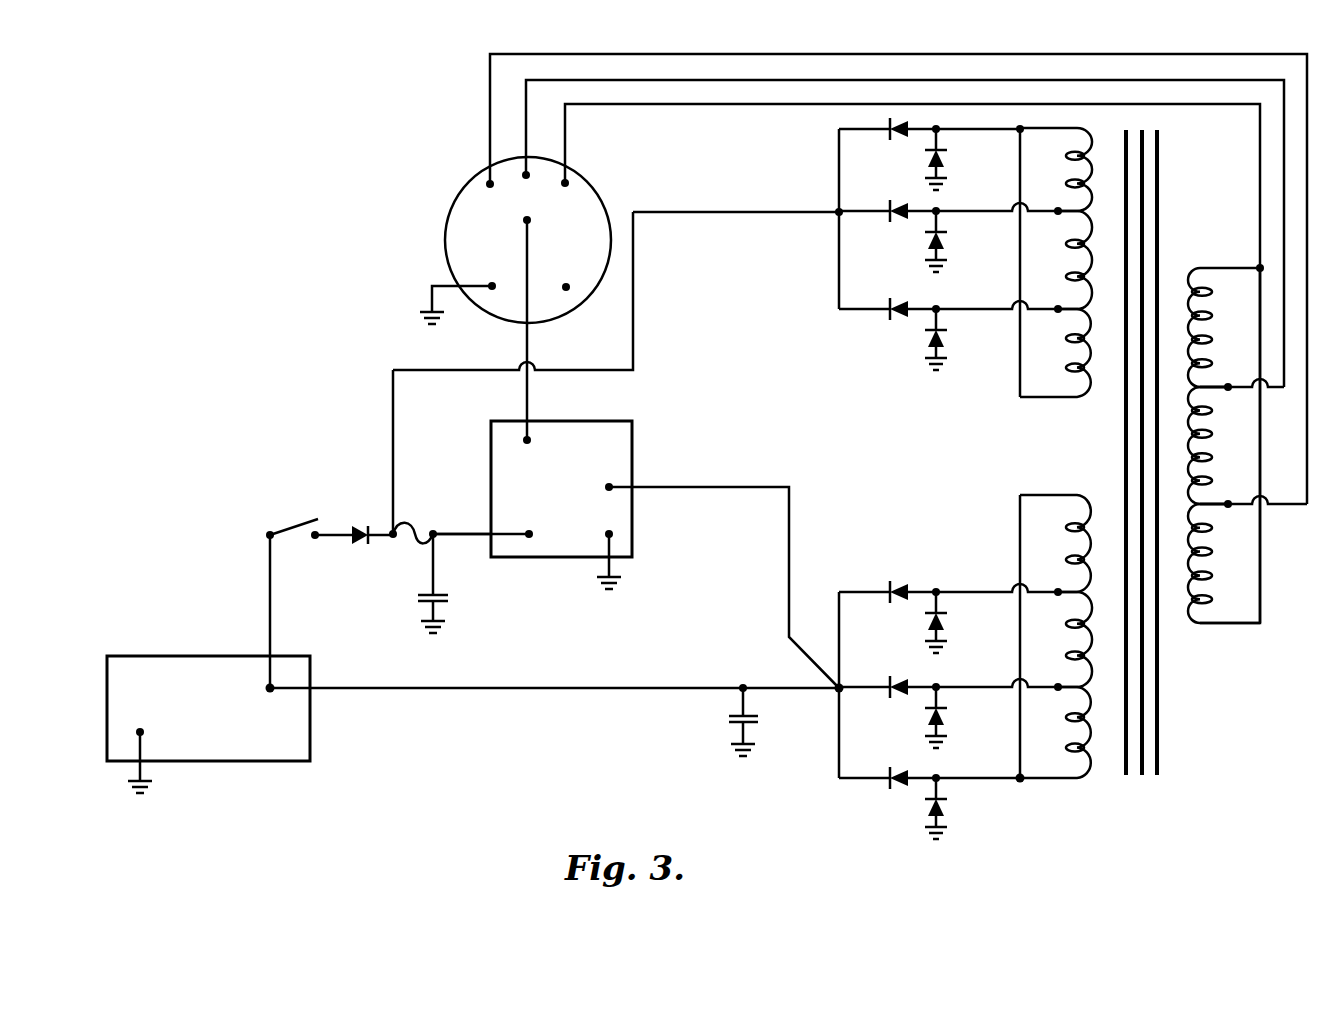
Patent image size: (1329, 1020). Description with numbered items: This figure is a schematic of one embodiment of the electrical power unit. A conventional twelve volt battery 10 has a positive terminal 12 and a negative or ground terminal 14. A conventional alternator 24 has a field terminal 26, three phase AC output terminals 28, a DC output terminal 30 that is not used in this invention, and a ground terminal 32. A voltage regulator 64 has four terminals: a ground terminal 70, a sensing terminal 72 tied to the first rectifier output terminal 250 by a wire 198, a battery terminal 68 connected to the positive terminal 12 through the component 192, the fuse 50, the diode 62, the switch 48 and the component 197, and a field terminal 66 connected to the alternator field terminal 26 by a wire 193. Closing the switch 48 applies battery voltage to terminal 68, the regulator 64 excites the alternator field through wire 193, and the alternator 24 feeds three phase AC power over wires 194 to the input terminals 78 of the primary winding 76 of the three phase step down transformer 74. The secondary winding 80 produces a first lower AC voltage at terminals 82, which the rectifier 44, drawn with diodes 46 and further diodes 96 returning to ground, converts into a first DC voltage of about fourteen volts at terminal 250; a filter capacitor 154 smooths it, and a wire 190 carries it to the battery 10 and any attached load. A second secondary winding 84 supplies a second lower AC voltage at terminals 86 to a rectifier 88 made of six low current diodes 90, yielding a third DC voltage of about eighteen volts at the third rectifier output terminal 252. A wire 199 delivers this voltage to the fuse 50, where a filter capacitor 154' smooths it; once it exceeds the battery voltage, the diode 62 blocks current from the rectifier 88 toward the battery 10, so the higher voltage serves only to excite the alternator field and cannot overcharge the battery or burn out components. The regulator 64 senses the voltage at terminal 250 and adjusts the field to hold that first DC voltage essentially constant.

The battery 10 is at (107, 700).
The positive terminal 12 is at (270, 694).
The negative or ground terminal 14 is at (145, 732).
The alternator 24 is at (446, 232).
The field terminal 26 is at (531, 221).
The three phase AC output terminals 28 is at (543, 193).
The DC output terminal 30 is at (566, 283).
The ground terminal 32 is at (492, 282).
The rectifier 44 is at (914, 536).
The diodes 46 is at (896, 606).
The switch 48 is at (292, 525).
The fuse 50 is at (421, 545).
The diode 62 is at (356, 545).
The voltage regulator 64 is at (491, 472).
The field terminal 66 is at (531, 441).
The battery terminal 68 is at (531, 530).
The ground terminal 70 is at (605, 534).
The sensing terminal 72 is at (605, 487).
The three phase AC step down transformer 74 is at (1200, 752).
The primary winding 76 is at (1224, 638).
The input terminals 78 is at (1258, 266).
The secondary winding 80 is at (1076, 797).
The secondary terminals 82 is at (1058, 590).
The second secondary winding 84 is at (1058, 410).
The secondary terminals 86 is at (1023, 133).
The rectifier 88 is at (850, 333).
The diodes 90 is at (896, 144).
The zener diodes 96 is at (948, 621).
The filter capacitor 154 is at (719, 725).
The filter capacitor 154' is at (413, 592).
The wire 190 is at (547, 690).
The circuit component 192 is at (466, 540).
The wire 193 is at (530, 398).
The wires 194 is at (1100, 53).
The circuit component 197 is at (264, 597).
The wire 198 is at (789, 540).
The wire 199 is at (694, 212).
The first rectifier output terminal 250 is at (837, 691).
The third rectifier output terminal 252 is at (836, 214).